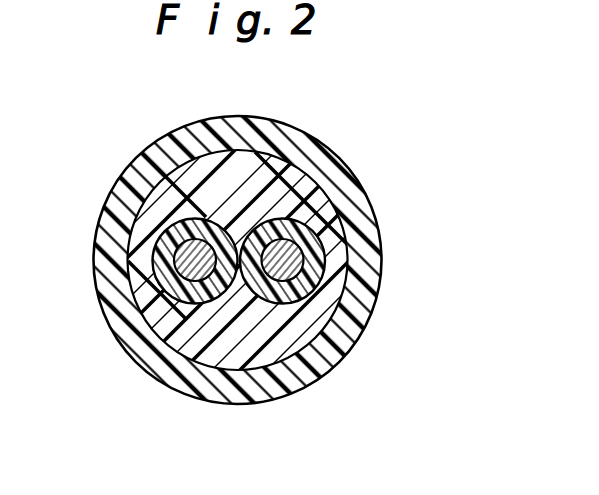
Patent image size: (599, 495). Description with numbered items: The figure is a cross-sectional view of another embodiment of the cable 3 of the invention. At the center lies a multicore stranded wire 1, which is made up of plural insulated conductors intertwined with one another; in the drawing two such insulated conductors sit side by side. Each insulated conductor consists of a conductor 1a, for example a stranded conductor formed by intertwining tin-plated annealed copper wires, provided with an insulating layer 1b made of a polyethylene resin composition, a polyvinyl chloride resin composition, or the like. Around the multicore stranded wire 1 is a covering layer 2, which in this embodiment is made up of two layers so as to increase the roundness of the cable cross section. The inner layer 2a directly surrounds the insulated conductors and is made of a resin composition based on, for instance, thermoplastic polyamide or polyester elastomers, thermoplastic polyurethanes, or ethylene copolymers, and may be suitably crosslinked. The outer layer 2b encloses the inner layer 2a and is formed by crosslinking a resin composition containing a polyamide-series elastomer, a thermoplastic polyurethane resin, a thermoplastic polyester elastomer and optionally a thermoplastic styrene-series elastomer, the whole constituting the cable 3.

The multicore stranded wire 1 is at (331, 261).
The conductor 1a is at (300, 295).
The insulating layer 1b is at (305, 225).
The covering layer 2 is at (282, 252).
The inner layer 2a is at (329, 212).
The outer layer 2b is at (334, 168).
The cable 3 is at (309, 132).